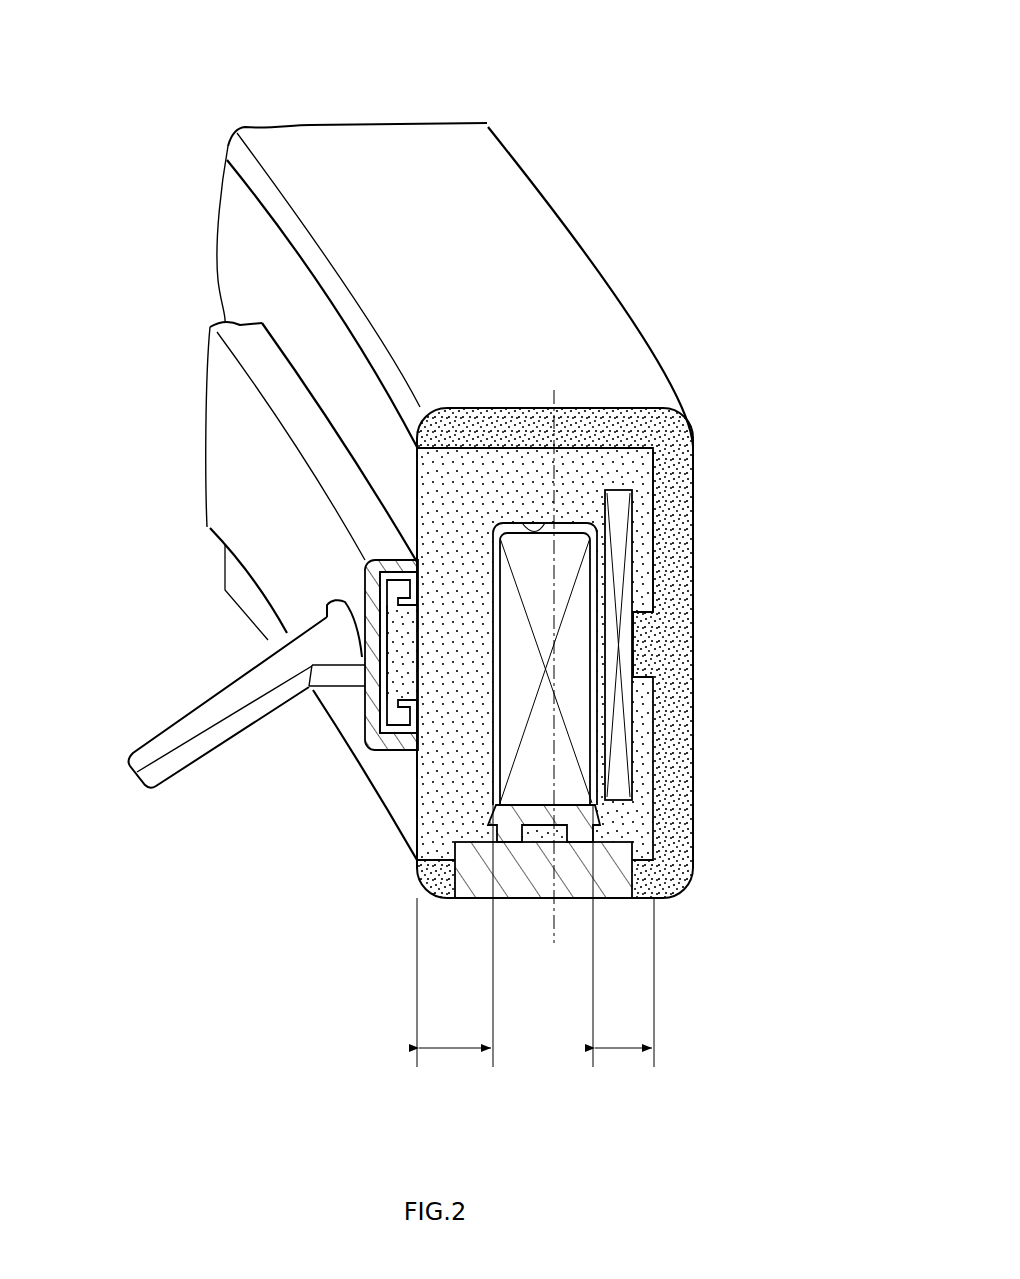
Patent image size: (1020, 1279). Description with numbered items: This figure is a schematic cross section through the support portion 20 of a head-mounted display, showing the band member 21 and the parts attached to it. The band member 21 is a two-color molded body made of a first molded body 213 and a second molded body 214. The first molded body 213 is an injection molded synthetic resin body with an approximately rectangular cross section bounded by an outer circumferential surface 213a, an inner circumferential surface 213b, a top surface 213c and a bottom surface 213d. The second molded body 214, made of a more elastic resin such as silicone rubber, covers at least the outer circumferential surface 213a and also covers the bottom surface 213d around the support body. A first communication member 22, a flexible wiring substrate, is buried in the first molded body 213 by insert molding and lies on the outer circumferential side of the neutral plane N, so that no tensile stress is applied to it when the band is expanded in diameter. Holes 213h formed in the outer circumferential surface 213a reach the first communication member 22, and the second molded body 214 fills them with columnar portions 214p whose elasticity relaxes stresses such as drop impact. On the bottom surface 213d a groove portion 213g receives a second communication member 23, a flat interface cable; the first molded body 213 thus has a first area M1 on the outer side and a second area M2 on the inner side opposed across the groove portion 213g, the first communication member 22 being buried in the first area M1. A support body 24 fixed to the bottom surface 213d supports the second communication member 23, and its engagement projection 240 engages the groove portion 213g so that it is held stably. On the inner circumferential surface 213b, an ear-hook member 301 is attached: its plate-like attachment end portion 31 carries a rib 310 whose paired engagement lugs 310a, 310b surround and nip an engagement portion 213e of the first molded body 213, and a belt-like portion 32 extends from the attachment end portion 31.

The support portion 20 is at (627, 76).
The band member 21 is at (752, 262).
The first molded body 213 is at (662, 402).
The second molded body 214 is at (575, 448).
The outer circumferential surface 213a is at (655, 472).
The inner circumferential surface 213b is at (408, 806).
The top surface 213c is at (450, 445).
The bottom surface 213d is at (423, 868).
The engagement portion 213e is at (387, 713).
The groove portion 213g is at (535, 523).
The holes 213h is at (662, 625).
The columnar portions 214p is at (657, 693).
The first communication member 22 is at (633, 550).
The second communication member 23 is at (573, 745).
The support body 24 is at (613, 873).
The engagement projection 240 is at (597, 815).
The ear-hook member 301 is at (128, 558).
The attachment end portion 31 is at (203, 530).
The belt-like portion 32 is at (200, 700).
The rib 310 is at (358, 522).
The engagement lug 310a is at (383, 590).
The engagement lug 310b is at (407, 720).
The neutral plane N is at (554, 943).
The first area M1 is at (623, 954).
The second area M2 is at (455, 954).